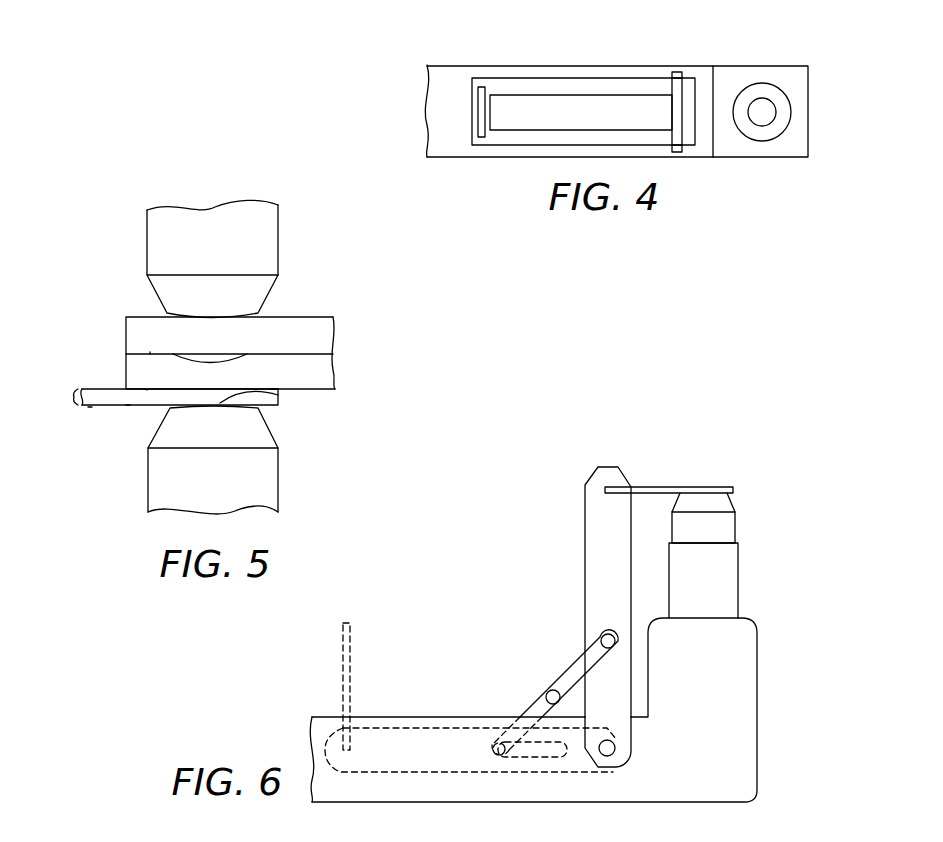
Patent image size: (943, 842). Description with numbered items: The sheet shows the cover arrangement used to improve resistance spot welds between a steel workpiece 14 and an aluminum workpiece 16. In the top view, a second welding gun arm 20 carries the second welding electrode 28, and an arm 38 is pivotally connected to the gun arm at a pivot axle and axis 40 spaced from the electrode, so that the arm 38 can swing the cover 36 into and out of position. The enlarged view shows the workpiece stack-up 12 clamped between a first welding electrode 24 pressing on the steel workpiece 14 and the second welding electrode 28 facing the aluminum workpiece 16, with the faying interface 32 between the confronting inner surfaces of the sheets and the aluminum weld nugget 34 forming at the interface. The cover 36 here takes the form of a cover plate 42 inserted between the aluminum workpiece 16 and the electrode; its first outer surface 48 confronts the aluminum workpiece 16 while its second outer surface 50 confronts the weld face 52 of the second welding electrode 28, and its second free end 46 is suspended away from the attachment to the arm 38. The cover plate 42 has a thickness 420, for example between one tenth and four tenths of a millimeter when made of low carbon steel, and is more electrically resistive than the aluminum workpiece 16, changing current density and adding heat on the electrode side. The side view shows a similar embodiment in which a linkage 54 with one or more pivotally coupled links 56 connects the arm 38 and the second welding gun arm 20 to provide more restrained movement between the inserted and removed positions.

In FIG. 5, the workpiece assembly 12 is at (342, 338).
In FIG. 5, the steel workpiece 14 is at (295, 325).
In FIG. 5, the aluminum workpiece 16 is at (325, 372).
In FIG. 4, the second welding gun arm 20 is at (497, 66).
In FIG. 6, the second welding gun arm 20 is at (757, 690).
In FIG. 5, the first welding electrode 24 is at (290, 227).
In FIG. 4, the second welding electrode 28 is at (770, 90).
In FIG. 5, the second welding electrode 28 is at (290, 471).
In FIG. 6, the second welding electrode 28 is at (752, 516).
In FIG. 5, the faying interface 32 is at (150, 352).
In FIG. 5, the aluminum weld nugget 34 is at (228, 357).
In FIG. 4, the cover 36 is at (470, 108).
In FIG. 5, the cover 36 is at (84, 417).
In FIG. 6, the cover 36 is at (651, 477).
In FIG. 4, the arm 38 is at (563, 80).
In FIG. 6, the arm 38 is at (585, 552).
In FIG. 4, the pivot axle and axis 40 is at (677, 152).
In FIG. 5, the cover plate 42 is at (92, 388).
In FIG. 5, the thickness 420 is at (52, 397).
In FIG. 5, the second free end 46 is at (278, 395).
In FIG. 5, the first outer surface 48 is at (145, 389).
In FIG. 5, the second outer surface 50 is at (128, 408).
In FIG. 5, the weld face 52 is at (264, 405).
In FIG. 6, the linkage 54 is at (530, 694).
In FIG. 6, the pivotally coupled links 56 is at (580, 665).